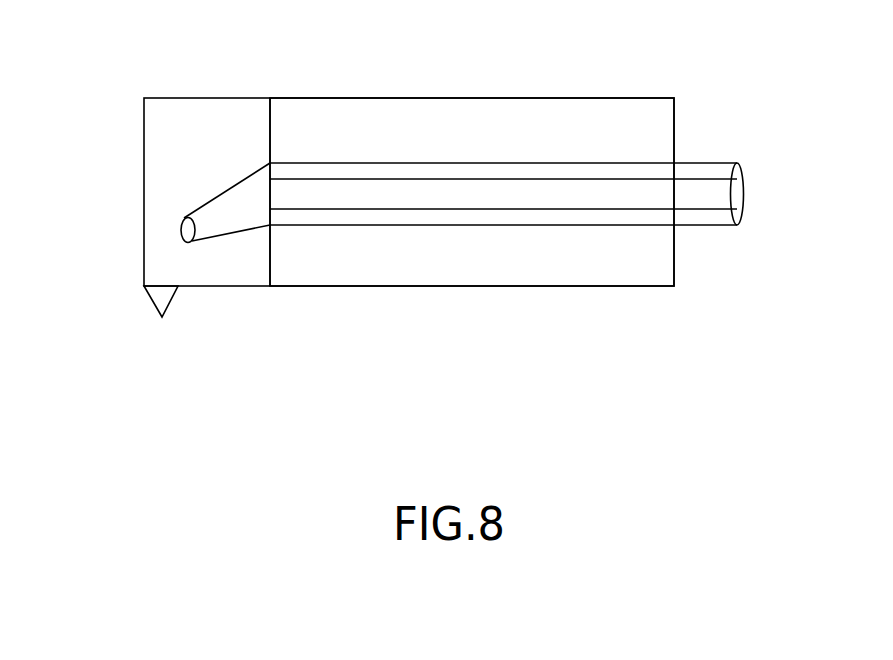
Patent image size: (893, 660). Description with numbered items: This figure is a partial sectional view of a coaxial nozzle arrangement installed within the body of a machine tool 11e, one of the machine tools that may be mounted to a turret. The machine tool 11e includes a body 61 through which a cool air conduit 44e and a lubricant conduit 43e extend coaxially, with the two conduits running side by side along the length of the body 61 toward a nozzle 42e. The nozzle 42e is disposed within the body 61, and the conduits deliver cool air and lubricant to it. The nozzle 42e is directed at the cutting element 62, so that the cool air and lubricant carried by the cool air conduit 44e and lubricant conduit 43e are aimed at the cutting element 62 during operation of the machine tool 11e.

The machine tool 11e is at (410, 98).
The body 61 is at (493, 98).
The cool air conduit 44e is at (592, 163).
The lubricant conduit 43e is at (500, 209).
The nozzle 42e is at (232, 188).
The cutting element 62 is at (152, 302).